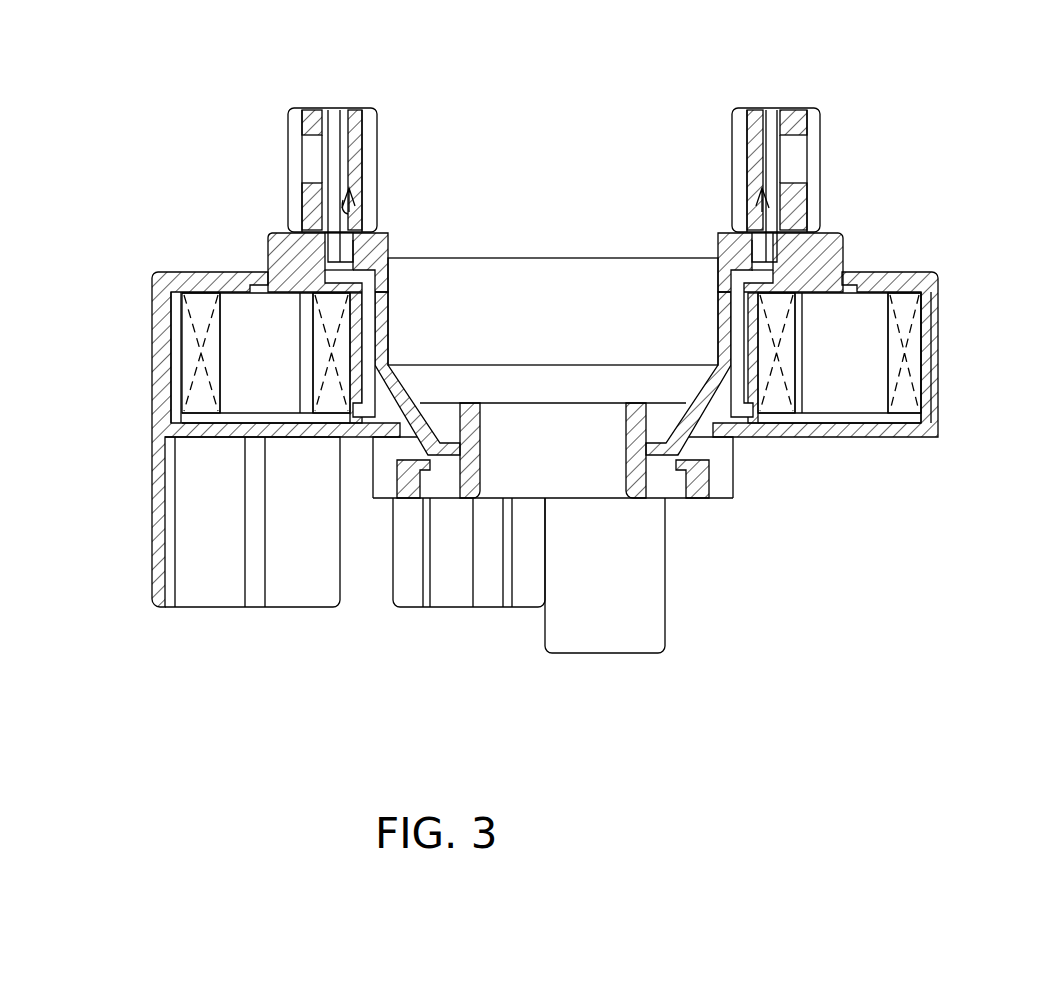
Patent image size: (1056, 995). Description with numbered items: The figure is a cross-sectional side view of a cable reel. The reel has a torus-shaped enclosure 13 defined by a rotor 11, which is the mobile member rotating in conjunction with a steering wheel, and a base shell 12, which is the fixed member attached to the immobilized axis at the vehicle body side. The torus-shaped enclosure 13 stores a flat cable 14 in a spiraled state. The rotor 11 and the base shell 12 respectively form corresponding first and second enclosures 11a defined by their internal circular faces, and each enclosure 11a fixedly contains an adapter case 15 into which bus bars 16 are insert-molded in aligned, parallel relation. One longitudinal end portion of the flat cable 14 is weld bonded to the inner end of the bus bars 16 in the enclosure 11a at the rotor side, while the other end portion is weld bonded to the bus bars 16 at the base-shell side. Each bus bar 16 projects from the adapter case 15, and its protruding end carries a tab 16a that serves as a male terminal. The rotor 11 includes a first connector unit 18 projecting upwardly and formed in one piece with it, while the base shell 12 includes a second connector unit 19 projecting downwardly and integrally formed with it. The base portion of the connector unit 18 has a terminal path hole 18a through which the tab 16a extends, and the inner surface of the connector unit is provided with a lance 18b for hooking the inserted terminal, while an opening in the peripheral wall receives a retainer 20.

The rotor 11 is at (838, 238).
The first enclosure 11a is at (790, 288).
The base shell 12 is at (855, 437).
The torus-shaped enclosure 13 is at (865, 312).
The flat cable 14 is at (925, 352).
The adapter case 15 is at (808, 238).
The bus bars 16 is at (380, 270).
The tab 16a is at (322, 205).
The first connector unit 18 is at (807, 93).
The terminal path hole 18a is at (313, 263).
The lance 18b is at (340, 210).
The second connector unit 19 is at (668, 600).
The retainer 20 is at (305, 157).